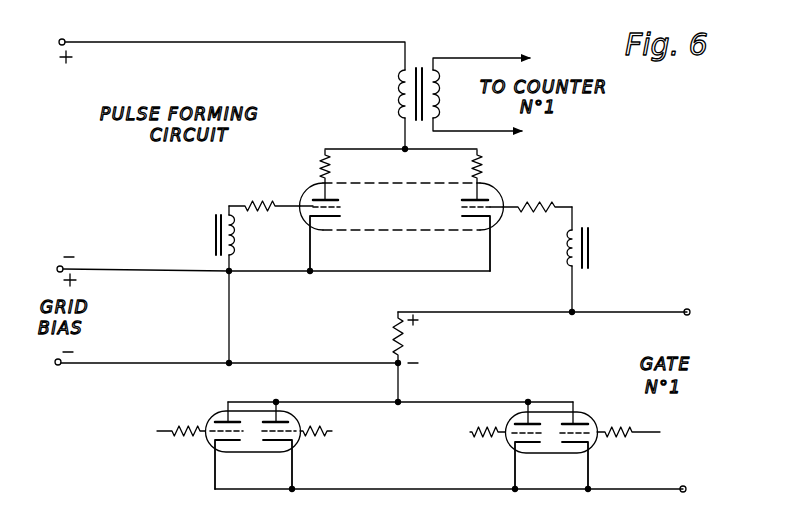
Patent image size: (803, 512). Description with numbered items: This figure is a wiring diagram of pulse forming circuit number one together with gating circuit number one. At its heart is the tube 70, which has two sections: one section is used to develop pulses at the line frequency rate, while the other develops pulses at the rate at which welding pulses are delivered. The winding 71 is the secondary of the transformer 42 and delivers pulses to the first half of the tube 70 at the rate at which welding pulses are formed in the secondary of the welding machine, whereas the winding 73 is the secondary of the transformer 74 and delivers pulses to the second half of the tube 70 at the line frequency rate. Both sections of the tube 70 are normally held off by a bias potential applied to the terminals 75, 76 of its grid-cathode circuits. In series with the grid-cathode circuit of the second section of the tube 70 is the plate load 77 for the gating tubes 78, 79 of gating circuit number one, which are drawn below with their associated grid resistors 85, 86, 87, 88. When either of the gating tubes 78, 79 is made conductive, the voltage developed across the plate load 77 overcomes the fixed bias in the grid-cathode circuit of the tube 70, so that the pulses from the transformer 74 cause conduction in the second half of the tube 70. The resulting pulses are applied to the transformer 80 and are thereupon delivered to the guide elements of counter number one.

The transformer 42 is at (214, 226).
The tube 70 is at (505, 189).
The winding 71 is at (238, 241).
The winding 73 is at (563, 253).
The transformer 74 is at (594, 246).
The terminal 75 is at (57, 268).
The terminal 76 is at (58, 366).
The plate load 77 is at (407, 340).
The gating tube 78 is at (260, 454).
The gating tube 79 is at (568, 456).
The transformer 80 is at (392, 90).
The grid resistor 85 is at (203, 434).
The grid resistor 86 is at (305, 437).
The grid resistor 87 is at (505, 438).
The grid resistor 88 is at (597, 437).